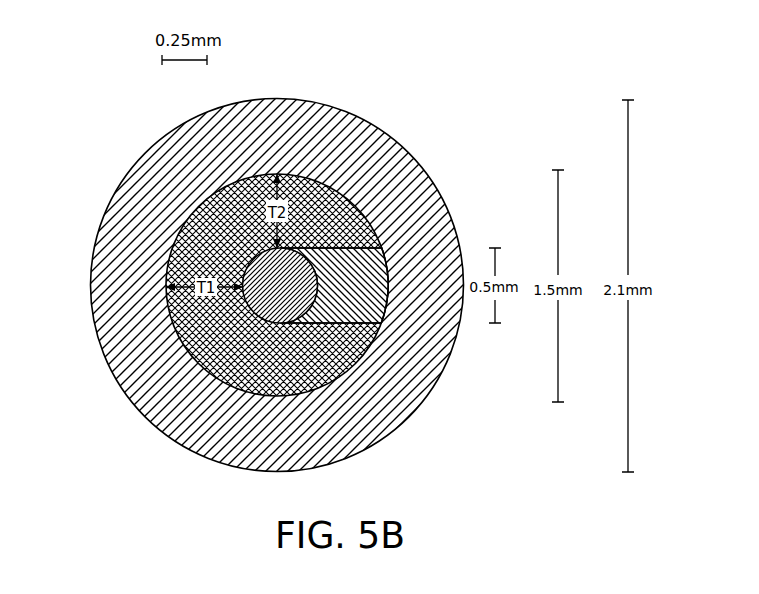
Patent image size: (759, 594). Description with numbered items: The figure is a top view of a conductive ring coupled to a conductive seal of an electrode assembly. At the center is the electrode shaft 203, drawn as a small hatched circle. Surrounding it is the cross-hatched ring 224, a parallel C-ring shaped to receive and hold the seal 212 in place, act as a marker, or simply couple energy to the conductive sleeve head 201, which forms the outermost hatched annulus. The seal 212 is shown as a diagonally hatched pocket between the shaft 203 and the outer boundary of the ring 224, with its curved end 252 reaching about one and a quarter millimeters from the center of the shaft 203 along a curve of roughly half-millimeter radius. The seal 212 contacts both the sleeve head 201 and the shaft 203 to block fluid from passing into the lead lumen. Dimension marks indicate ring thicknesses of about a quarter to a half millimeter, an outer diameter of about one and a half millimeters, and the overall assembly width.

The sleeve head 201 is at (140, 352).
The rings 224 is at (213, 218).
The electrode shaft 203 is at (252, 306).
The curved end 252 is at (393, 265).
The seal 212 is at (385, 309).